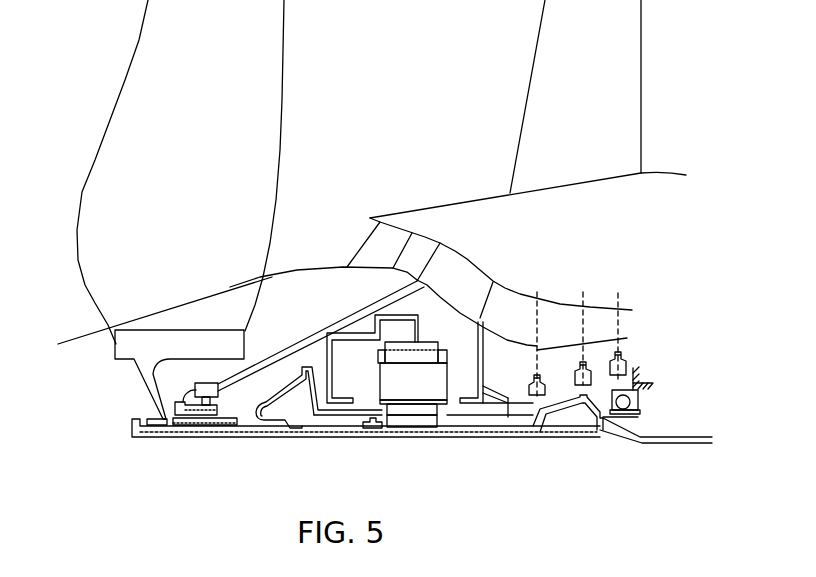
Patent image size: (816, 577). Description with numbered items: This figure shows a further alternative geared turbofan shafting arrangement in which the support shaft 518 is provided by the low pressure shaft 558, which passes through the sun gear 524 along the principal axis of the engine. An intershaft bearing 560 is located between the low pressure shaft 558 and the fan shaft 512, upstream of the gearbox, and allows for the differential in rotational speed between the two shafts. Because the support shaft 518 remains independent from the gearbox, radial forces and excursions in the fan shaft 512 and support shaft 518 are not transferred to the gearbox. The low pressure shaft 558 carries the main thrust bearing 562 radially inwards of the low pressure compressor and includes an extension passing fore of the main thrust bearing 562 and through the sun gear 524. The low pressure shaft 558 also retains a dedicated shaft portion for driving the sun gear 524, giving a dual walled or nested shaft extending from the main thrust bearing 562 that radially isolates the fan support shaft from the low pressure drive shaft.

The fan shaft 512 is at (243, 438).
The support shaft 518 is at (467, 438).
The sun gear 524 is at (410, 418).
The low pressure shaft 558 is at (682, 441).
The intershaft bearing 560 is at (368, 433).
The main thrust bearing 562 is at (632, 402).